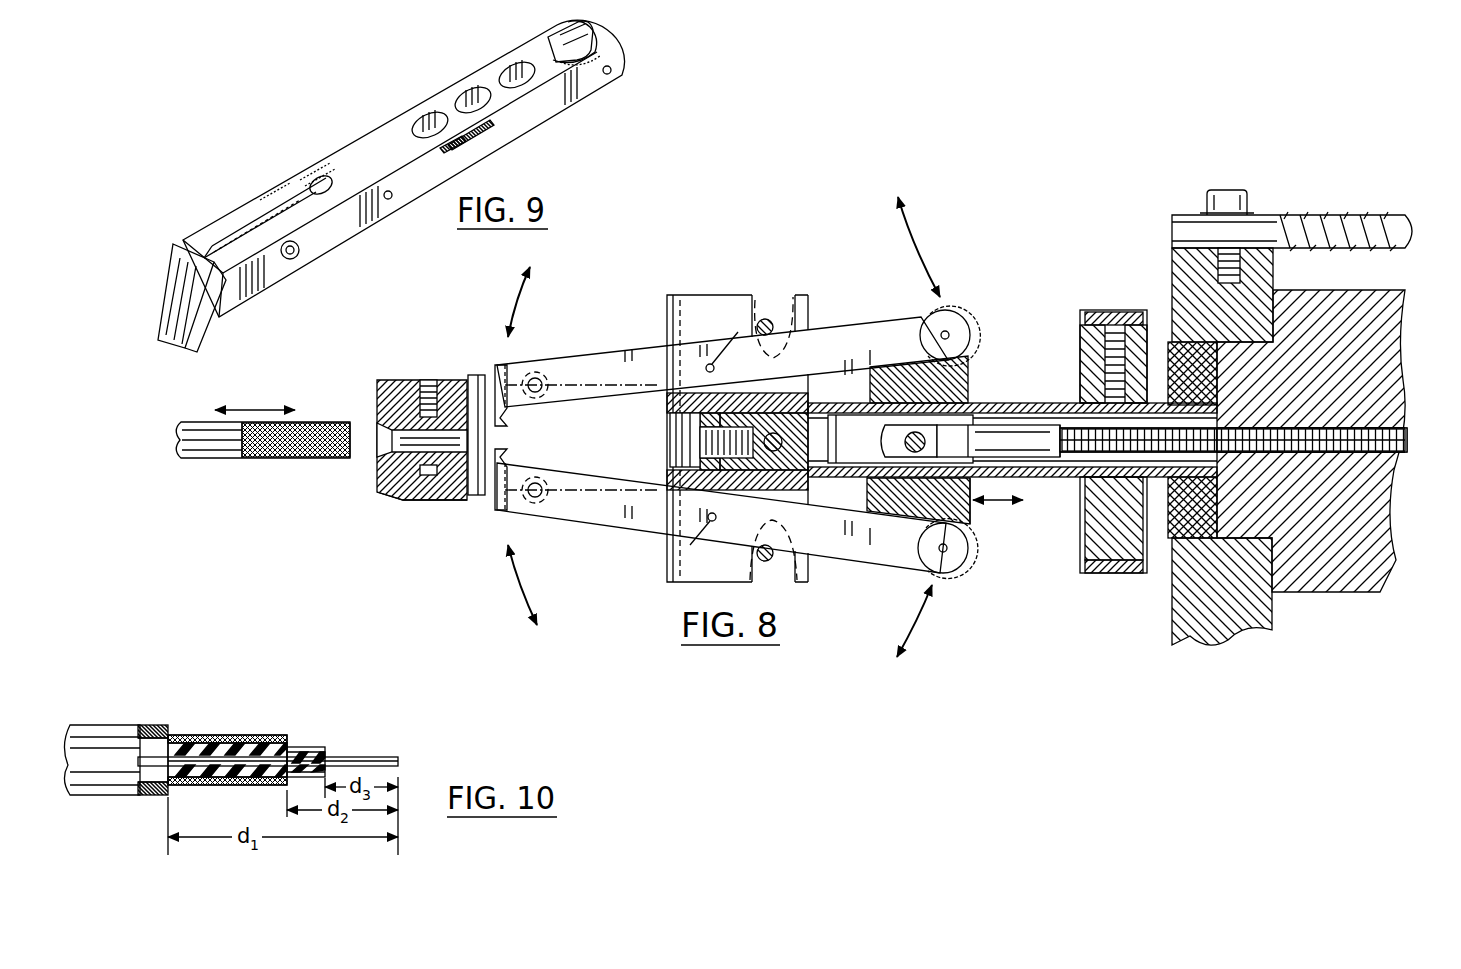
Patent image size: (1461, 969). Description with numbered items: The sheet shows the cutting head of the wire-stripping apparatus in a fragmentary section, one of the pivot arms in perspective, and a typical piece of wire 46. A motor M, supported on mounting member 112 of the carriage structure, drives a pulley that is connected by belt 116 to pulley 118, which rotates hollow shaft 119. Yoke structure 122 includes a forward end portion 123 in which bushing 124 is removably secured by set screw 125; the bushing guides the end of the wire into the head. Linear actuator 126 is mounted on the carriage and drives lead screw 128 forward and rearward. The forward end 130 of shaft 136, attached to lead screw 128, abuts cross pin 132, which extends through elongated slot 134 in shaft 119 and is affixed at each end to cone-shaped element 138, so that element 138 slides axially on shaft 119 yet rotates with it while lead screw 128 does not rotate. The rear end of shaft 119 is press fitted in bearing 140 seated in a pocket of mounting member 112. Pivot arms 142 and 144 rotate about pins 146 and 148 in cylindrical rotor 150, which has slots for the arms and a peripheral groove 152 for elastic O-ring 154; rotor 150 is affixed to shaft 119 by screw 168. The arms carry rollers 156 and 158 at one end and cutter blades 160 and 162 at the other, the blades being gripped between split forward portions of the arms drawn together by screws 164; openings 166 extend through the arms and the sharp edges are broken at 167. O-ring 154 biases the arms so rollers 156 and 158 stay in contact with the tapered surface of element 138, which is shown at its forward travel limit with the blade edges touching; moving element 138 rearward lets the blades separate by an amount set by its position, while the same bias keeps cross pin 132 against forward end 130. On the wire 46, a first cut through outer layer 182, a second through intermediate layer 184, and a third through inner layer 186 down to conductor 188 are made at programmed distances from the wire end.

In FIG. 8, the wire 46 is at (210, 460).
In FIG. 10, the wire 46 is at (112, 725).
In FIG. 8, the mounting member 112 is at (1172, 268).
In FIG. 8, the belt 116 is at (1128, 575).
In FIG. 8, the pulley 118 is at (1080, 548).
In FIG. 8, the hollow shaft 119 is at (1045, 480).
In FIG. 8, the yoke structure 122 is at (475, 495).
In FIG. 8, the forward end portion 123 is at (412, 500).
In FIG. 8, the bushing 124 is at (377, 490).
In FIG. 8, the set screw 125 is at (428, 380).
In FIG. 8, the linear actuator 126 is at (1300, 592).
In FIG. 8, the lead screw 128 is at (1402, 424).
In FIG. 8, the forward end of shaft 136 130 is at (966, 392).
In FIG. 8, the cross pin 132 is at (858, 425).
In FIG. 8, the elongated slot 134 is at (895, 450).
In FIG. 8, the shaft 136 is at (1040, 425).
In FIG. 8, the cone-shaped element 138 is at (973, 512).
In FIG. 8, the bearing 140 is at (1175, 350).
In FIG. 8, the pivot arm 142 is at (722, 358).
In FIG. 9, the pivot arm 142 is at (404, 168).
In FIG. 8, the pivot arm 144 is at (721, 519).
In FIG. 8, the pin 146 is at (738, 332).
In FIG. 8, the pin 148 is at (690, 545).
In FIG. 8, the cylindrical rotor 150 is at (716, 411).
In FIG. 8, the peripheral groove 152 is at (777, 320).
In FIG. 8, the O-ring 154 is at (762, 318).
In FIG. 8, the roller 156 is at (962, 318).
In FIG. 9, the roller 156 is at (600, 28).
In FIG. 8, the roller 158 is at (950, 580).
In FIG. 8, the cutter blade 160 is at (507, 420).
In FIG. 9, the cutter blade 160 is at (160, 312).
In FIG. 8, the cutter blade 162 is at (507, 455).
In FIG. 8, the screws 164 is at (536, 378).
In FIG. 9, the screws 164 is at (298, 255).
In FIG. 9, the openings 166 is at (510, 67).
In FIG. 9, the broken sharp edges 167 is at (415, 115).
In FIG. 8, the screw 168 is at (670, 440).
In FIG. 10, the outer layer 182 is at (174, 727).
In FIG. 10, the intermediate layer 184 is at (255, 737).
In FIG. 10, the inner layer 186 is at (318, 748).
In FIG. 10, the conductor 188 is at (388, 757).
In FIG. 8, the motor M is at (1322, 389).